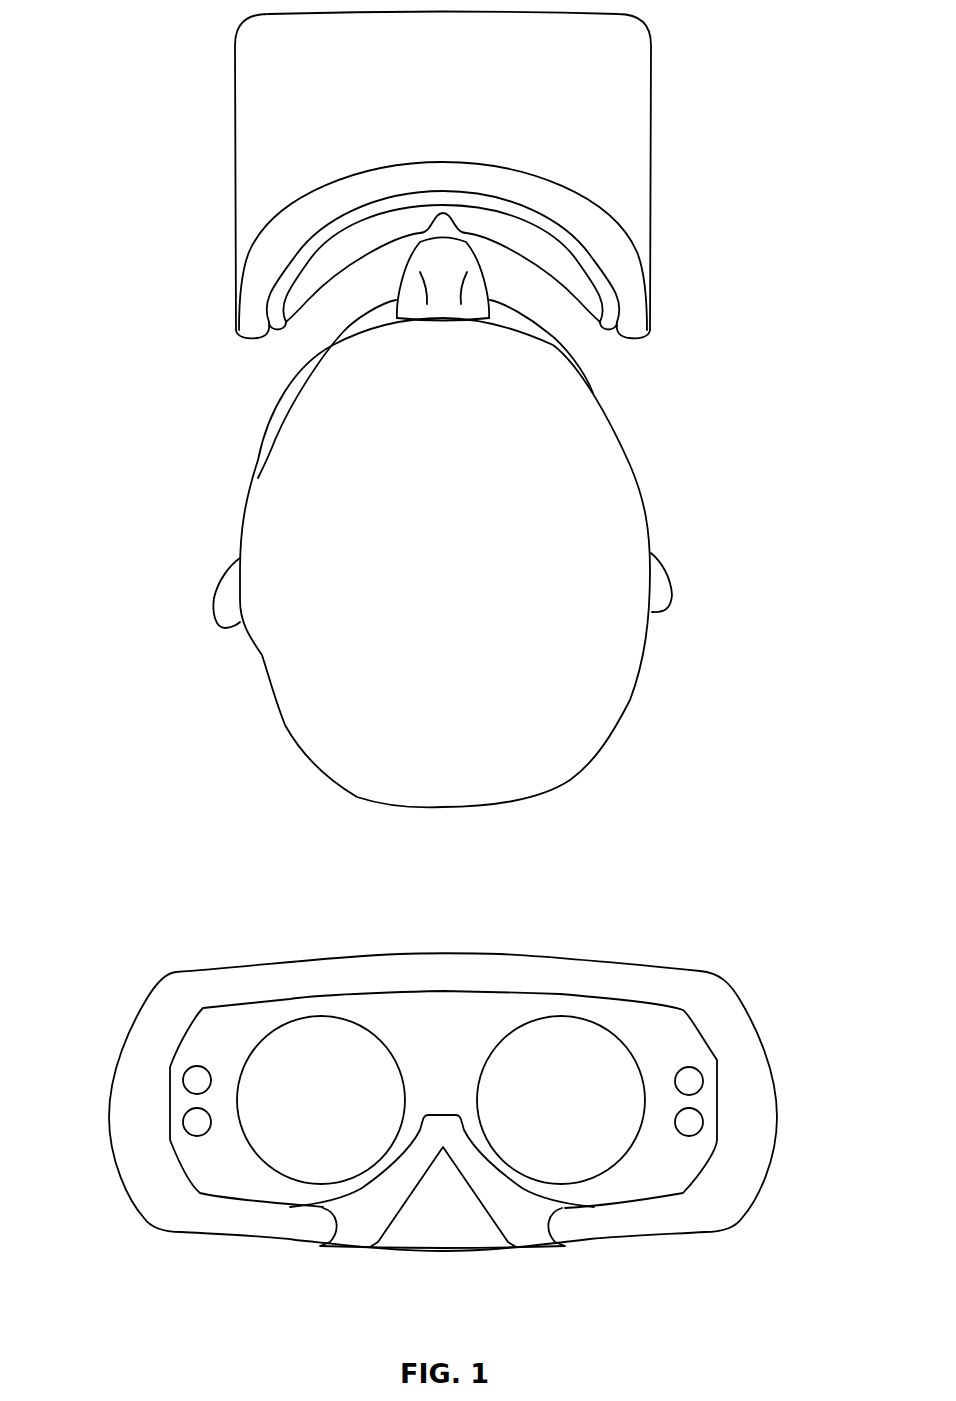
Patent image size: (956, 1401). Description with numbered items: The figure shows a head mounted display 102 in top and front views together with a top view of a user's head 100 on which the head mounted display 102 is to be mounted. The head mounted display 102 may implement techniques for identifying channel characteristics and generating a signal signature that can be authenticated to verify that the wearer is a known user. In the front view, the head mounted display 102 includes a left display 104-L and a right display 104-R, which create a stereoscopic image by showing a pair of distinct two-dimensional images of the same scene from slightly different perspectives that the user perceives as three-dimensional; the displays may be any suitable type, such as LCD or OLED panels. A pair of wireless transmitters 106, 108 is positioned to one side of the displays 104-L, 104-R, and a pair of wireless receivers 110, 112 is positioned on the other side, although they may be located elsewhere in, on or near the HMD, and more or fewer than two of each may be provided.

The user's head 100 is at (262, 512).
The head mounted display 102 is at (253, 186).
The left display 104-L is at (300, 1040).
The right display 104-R is at (552, 1030).
The wireless transmitter 106 is at (190, 1083).
The wireless transmitter 108 is at (190, 1127).
The wireless receiver 110 is at (697, 1080).
The wireless receiver 112 is at (700, 1123).